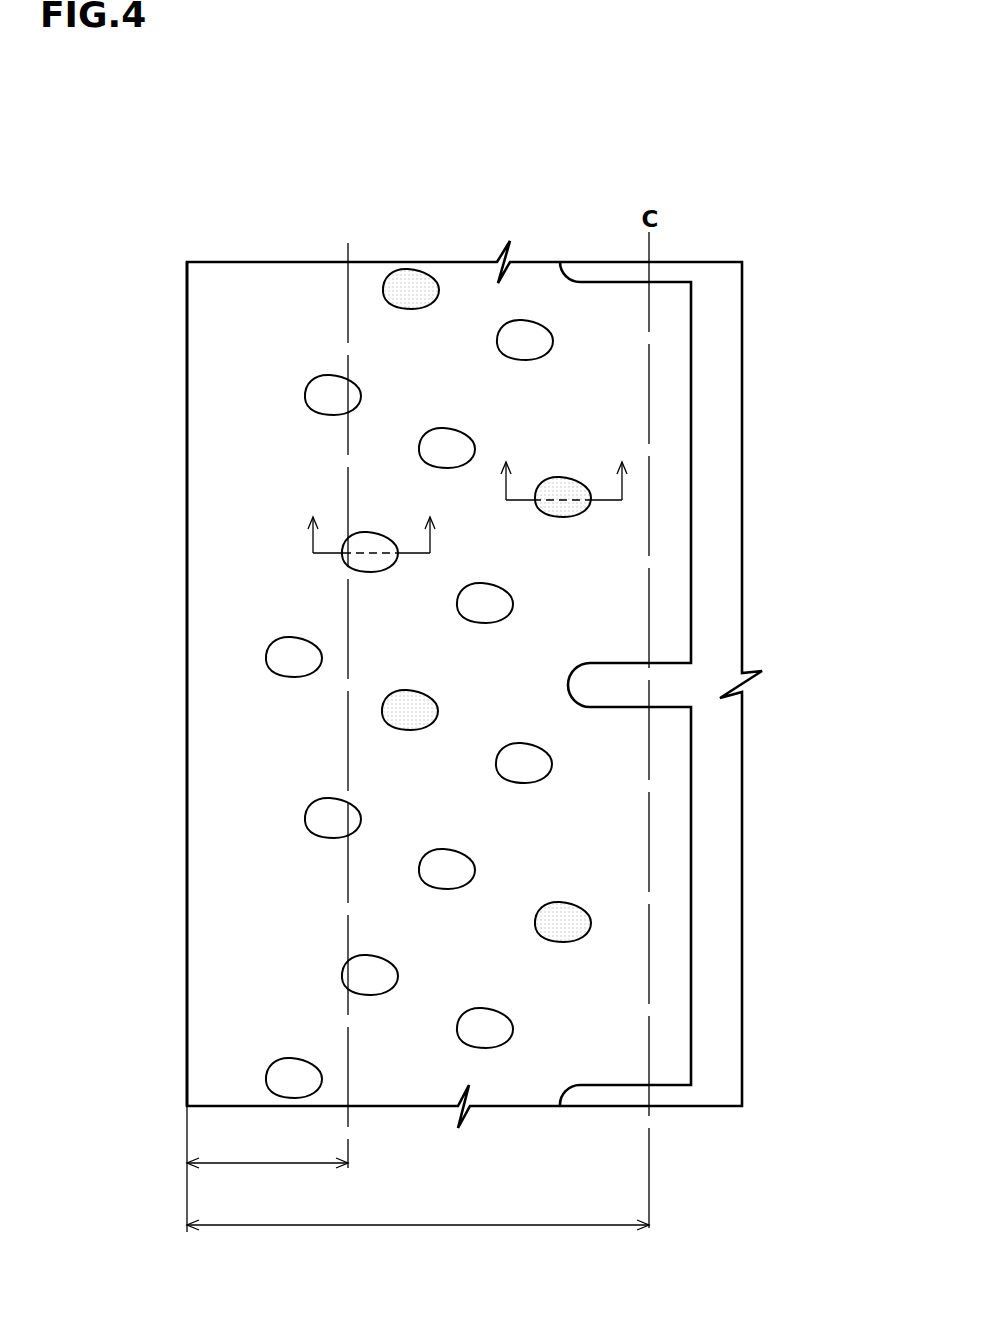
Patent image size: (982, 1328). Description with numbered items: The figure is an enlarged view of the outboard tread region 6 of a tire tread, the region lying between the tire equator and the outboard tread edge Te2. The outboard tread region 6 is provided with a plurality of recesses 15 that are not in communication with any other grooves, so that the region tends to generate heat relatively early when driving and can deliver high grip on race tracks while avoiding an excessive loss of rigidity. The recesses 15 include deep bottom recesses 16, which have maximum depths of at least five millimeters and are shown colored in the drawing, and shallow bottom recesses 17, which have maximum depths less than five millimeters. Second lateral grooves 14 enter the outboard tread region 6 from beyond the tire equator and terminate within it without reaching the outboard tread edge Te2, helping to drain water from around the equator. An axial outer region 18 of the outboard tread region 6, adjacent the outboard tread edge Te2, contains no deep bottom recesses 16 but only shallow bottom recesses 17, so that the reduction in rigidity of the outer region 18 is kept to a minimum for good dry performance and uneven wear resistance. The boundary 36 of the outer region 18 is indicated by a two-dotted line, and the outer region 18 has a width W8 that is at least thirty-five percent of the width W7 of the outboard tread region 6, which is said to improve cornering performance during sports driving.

The outboard tread region 6 is at (375, 253).
The second lateral groove 14 is at (657, 275).
The recess 15 is at (409, 293).
The deep bottom recess 16 is at (565, 492).
The shallow bottom recess 17 is at (372, 548).
The axial outer region 18 is at (268, 325).
The boundary 36 is at (347, 917).
The outboard tread edge Te2 is at (185, 308).
The width of the outboard tread region W7 is at (418, 1242).
The width of the outer region W8 is at (267, 1181).